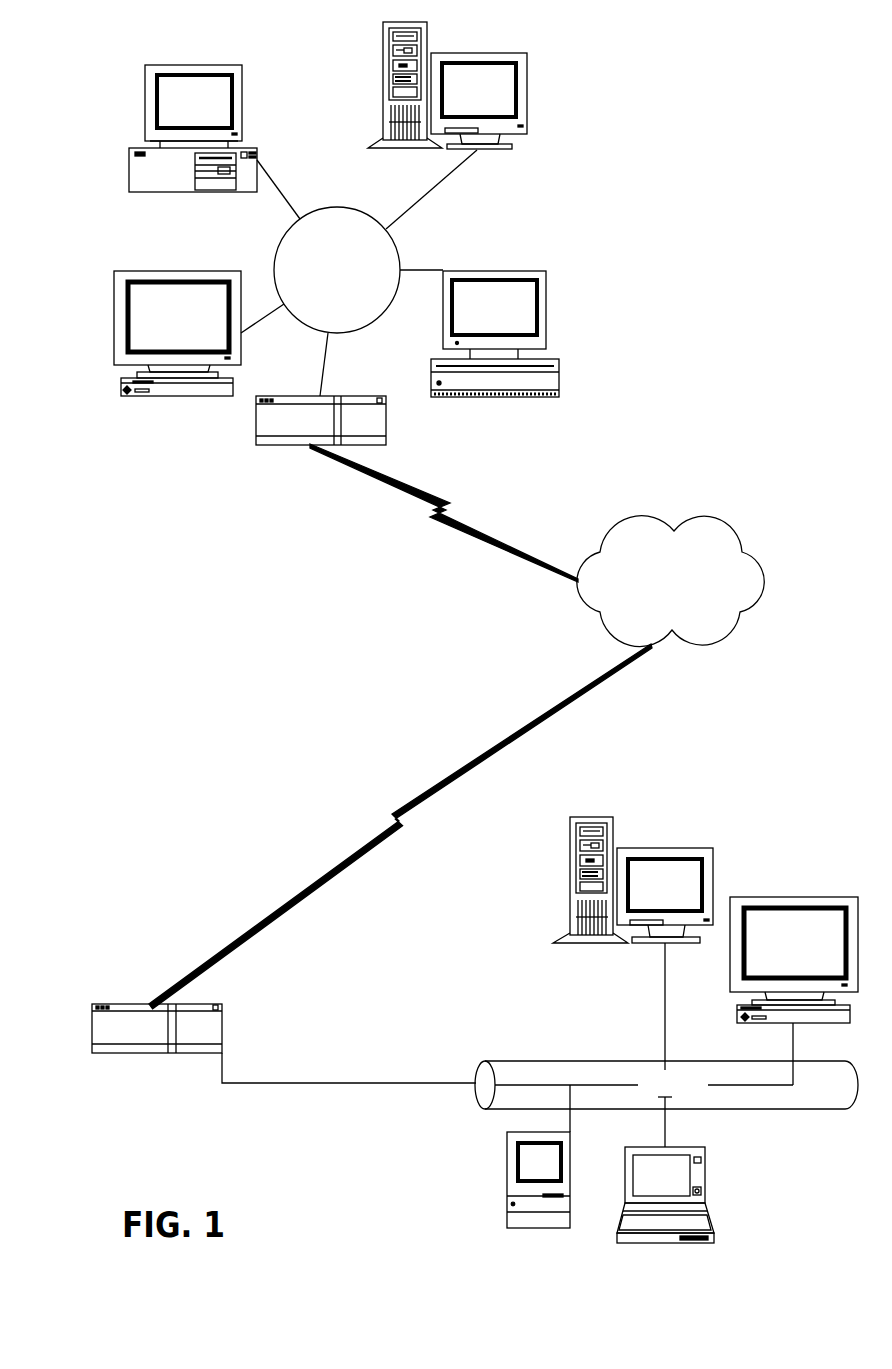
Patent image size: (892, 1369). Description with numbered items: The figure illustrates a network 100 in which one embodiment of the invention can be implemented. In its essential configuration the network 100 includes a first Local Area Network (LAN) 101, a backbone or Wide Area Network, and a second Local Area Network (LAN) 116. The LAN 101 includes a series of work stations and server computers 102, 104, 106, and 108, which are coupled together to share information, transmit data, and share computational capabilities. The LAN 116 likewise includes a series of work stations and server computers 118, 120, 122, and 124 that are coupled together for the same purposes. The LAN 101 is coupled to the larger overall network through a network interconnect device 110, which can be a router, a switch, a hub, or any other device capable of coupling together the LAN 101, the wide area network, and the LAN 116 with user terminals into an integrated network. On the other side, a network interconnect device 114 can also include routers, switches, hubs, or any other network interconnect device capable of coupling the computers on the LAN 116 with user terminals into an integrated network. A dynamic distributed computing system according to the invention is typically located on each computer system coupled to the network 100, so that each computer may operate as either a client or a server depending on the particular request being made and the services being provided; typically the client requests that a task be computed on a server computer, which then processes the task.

The network 100 is at (679, 139).
The Local Area Network (LAN) 101 is at (380, 267).
The work station and server computer 102 is at (163, 112).
The work station and server computer 104 is at (447, 74).
The work station and server computer 106 is at (136, 318).
The work station and server computer 108 is at (520, 316).
The network interconnect device 110 is at (286, 424).
The network interconnect device 114 is at (157, 1010).
The Local Area Network (LAN) 116 is at (666, 1065).
The work station and server computer 118 is at (669, 712).
The work station and server computer 120 is at (794, 942).
The work station and server computer 122 is at (501, 1180).
The work station and server computer 124 is at (709, 1195).